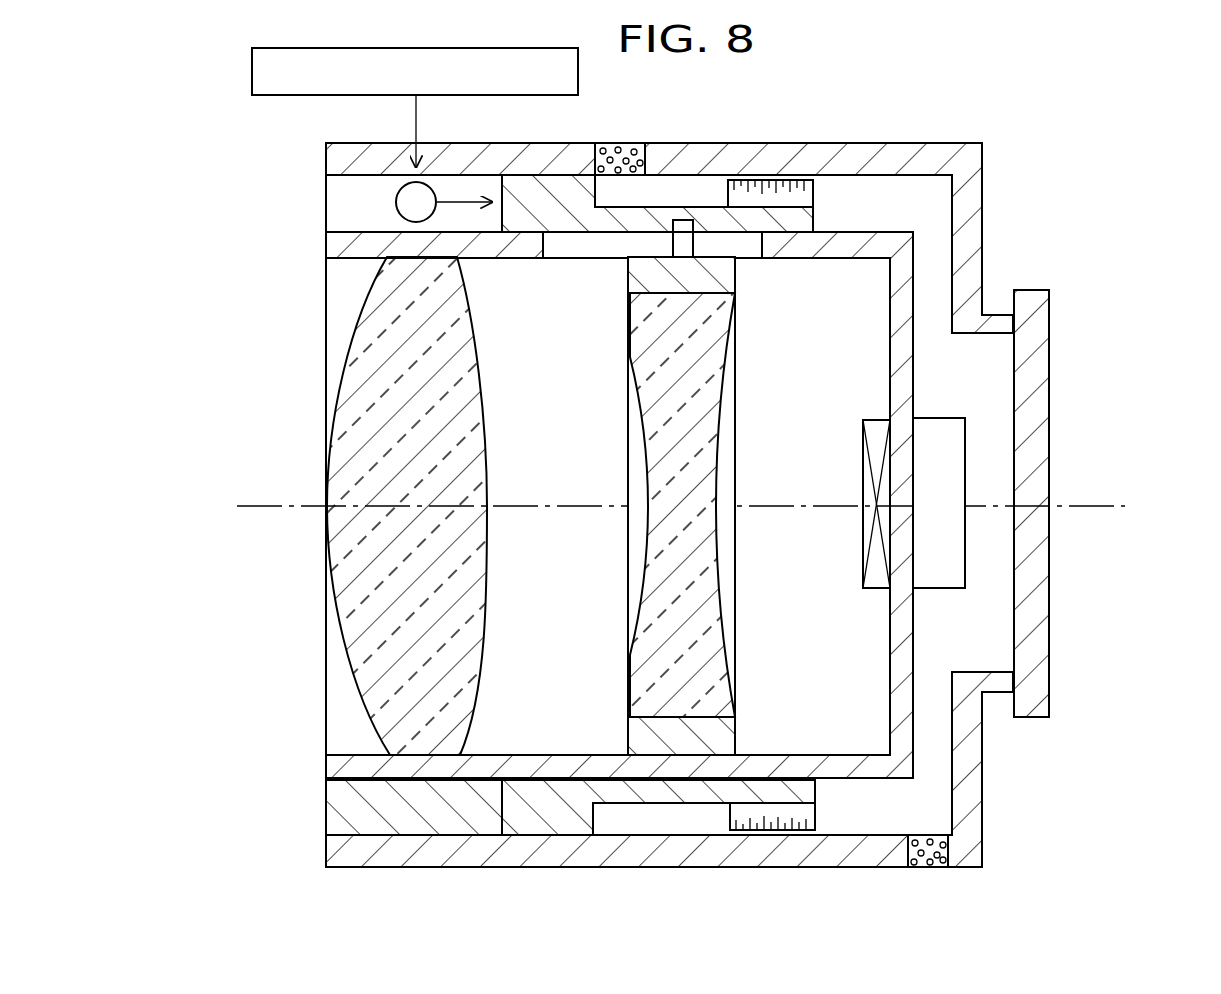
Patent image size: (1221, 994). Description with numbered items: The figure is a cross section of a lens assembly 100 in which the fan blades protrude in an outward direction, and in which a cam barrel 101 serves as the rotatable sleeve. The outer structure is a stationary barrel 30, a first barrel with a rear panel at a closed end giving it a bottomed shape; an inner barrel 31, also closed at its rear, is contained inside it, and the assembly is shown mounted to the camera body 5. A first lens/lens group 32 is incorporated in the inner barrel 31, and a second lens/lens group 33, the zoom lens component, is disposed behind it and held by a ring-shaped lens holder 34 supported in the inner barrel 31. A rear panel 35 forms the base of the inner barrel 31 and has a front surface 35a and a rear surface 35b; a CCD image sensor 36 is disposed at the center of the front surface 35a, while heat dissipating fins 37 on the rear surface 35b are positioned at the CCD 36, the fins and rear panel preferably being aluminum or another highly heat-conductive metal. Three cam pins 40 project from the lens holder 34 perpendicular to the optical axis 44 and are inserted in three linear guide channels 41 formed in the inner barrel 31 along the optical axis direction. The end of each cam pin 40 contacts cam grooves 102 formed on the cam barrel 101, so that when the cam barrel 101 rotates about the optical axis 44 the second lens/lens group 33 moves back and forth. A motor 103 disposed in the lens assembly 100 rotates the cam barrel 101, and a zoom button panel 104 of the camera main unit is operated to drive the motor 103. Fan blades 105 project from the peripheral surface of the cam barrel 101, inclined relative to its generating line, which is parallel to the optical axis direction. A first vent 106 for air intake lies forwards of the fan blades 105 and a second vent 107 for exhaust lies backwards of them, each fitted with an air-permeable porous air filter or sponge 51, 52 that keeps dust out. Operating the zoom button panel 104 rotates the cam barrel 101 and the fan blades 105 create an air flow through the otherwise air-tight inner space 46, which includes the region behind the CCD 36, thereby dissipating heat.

The camera body / mount flange 5 is at (1040, 718).
The stationary barrel 30 is at (990, 179).
The inner barrel 31 is at (318, 246).
The first lens/lens group 32 is at (342, 557).
The second lens/lens group 33 is at (654, 563).
The lens holder 34 is at (634, 738).
The rear panel 35 is at (893, 600).
The front surface 35a is at (897, 640).
The rear surface 35b is at (917, 638).
The CCD image sensor 36 is at (876, 452).
The heat dissipating fins 37 is at (952, 533).
The cam pins 40 is at (687, 220).
The linear guide channels 41 is at (545, 240).
The optical axis 44 is at (275, 506).
The inner space 46 is at (985, 366).
The air filter or sponge 51 is at (620, 143).
The air filter or sponge 52 is at (920, 868).
The lens assembly 100 is at (1103, 265).
The cam barrel 101 is at (722, 198).
The cam grooves 102 is at (660, 220).
The motor 103 is at (395, 203).
The zoom button panel 104 is at (252, 76).
The fan blades 105 is at (808, 194).
The first vent 106 is at (606, 143).
The second vent 107 is at (932, 868).